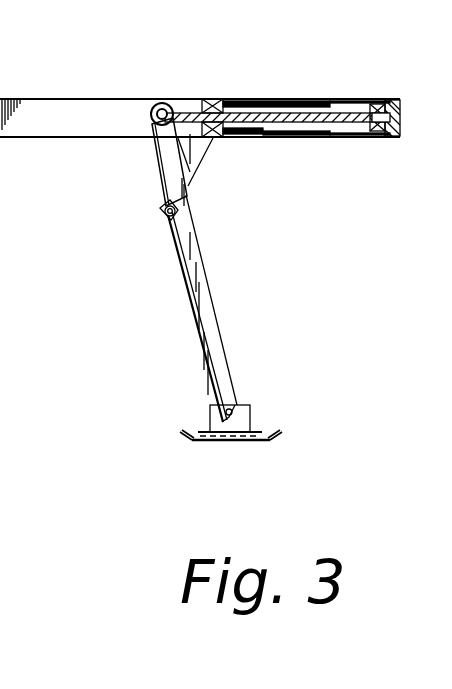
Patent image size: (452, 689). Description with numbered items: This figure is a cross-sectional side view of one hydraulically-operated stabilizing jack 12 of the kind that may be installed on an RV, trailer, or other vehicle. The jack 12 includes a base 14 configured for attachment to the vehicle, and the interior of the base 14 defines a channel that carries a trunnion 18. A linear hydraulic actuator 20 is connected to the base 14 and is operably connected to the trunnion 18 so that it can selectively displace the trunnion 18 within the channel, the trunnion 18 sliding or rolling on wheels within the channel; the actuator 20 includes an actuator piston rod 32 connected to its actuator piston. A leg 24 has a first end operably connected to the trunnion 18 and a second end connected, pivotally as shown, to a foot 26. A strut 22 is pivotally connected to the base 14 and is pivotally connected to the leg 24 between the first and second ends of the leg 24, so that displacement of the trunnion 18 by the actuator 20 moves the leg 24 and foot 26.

The stabilizing jack 12 is at (323, 368).
The base 14 is at (38, 105).
The trunnion 18 is at (162, 103).
The linear hydraulic actuator 20 is at (237, 99).
The strut 22 is at (196, 153).
The leg 24 is at (198, 277).
The foot 26 is at (272, 437).
The actuator piston rod 32 is at (350, 115).